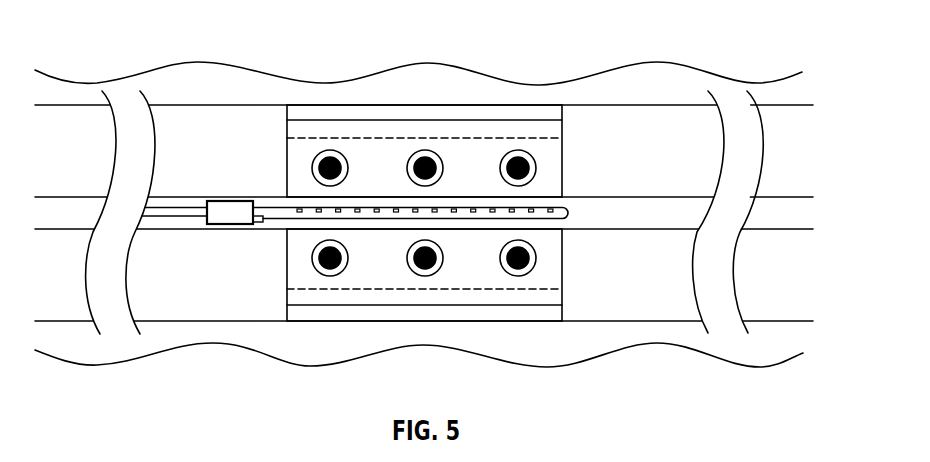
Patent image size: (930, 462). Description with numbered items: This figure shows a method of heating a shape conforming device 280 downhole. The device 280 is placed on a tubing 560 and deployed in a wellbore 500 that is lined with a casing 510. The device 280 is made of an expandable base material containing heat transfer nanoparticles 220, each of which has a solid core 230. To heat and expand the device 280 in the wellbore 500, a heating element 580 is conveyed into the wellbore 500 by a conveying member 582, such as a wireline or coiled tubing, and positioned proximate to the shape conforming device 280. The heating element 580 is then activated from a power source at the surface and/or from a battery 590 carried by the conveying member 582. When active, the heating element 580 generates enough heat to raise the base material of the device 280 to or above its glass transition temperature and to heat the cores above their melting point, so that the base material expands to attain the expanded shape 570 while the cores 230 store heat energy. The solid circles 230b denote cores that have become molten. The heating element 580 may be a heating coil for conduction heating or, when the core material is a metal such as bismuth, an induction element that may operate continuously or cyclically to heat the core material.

The wellbore 500 is at (207, 61).
The casing 510 is at (255, 103).
The tubing 560 is at (686, 230).
The expanded shape 570 is at (406, 98).
The solid core 230 is at (425, 157).
The molten core 230b is at (528, 262).
The heat transfer nanoparticles 220 is at (537, 166).
The shape conforming device 280 is at (287, 285).
The conveying member 582 is at (175, 222).
The battery 590 is at (228, 201).
The heating element 580 is at (284, 225).